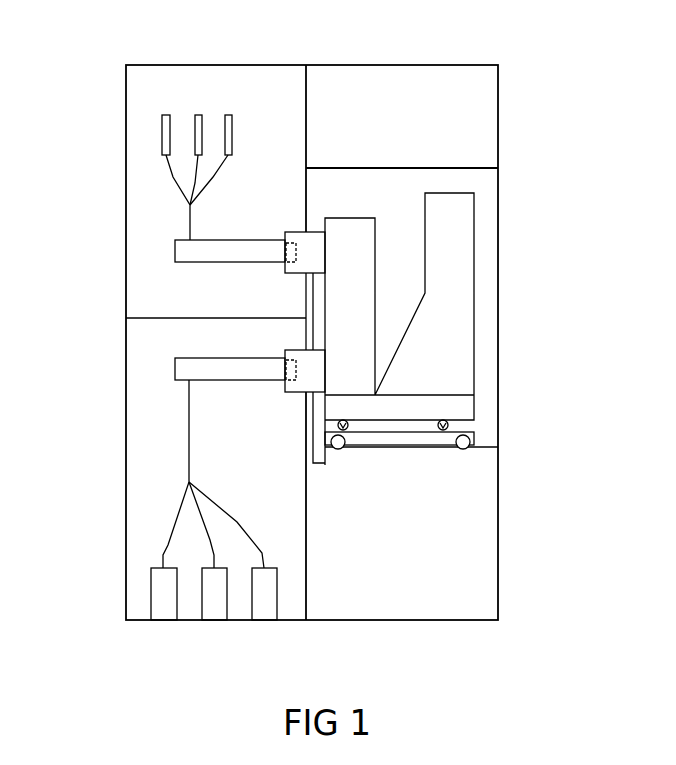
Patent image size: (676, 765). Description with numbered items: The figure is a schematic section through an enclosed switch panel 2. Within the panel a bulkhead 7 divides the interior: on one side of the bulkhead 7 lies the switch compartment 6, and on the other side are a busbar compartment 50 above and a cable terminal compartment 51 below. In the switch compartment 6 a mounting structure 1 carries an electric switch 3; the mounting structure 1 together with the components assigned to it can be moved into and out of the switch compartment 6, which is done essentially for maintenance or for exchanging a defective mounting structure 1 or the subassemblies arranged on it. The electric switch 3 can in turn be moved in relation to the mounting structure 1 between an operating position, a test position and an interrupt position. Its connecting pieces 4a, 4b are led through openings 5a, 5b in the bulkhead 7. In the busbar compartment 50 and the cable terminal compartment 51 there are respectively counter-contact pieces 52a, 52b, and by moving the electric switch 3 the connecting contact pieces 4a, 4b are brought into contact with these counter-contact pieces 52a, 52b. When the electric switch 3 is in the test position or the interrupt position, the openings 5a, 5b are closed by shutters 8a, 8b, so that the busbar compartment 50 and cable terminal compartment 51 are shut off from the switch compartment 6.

The mounting structure 1 is at (475, 435).
The switch panel 2 is at (533, 160).
The electric switch 3 is at (475, 372).
The connecting piece 4a is at (285, 272).
The connecting piece 4b is at (285, 350).
The opening 5a is at (296, 224).
The opening 5b is at (294, 394).
The switch compartment 6 is at (486, 185).
The bulkhead 7 is at (306, 197).
The shutter 8a is at (305, 297).
The shutter 8b is at (308, 428).
The busbar compartment 50 is at (260, 96).
The cable terminal compartment 51 is at (147, 488).
The counter-contact piece 52a is at (268, 262).
The counter-contact piece 52b is at (292, 362).